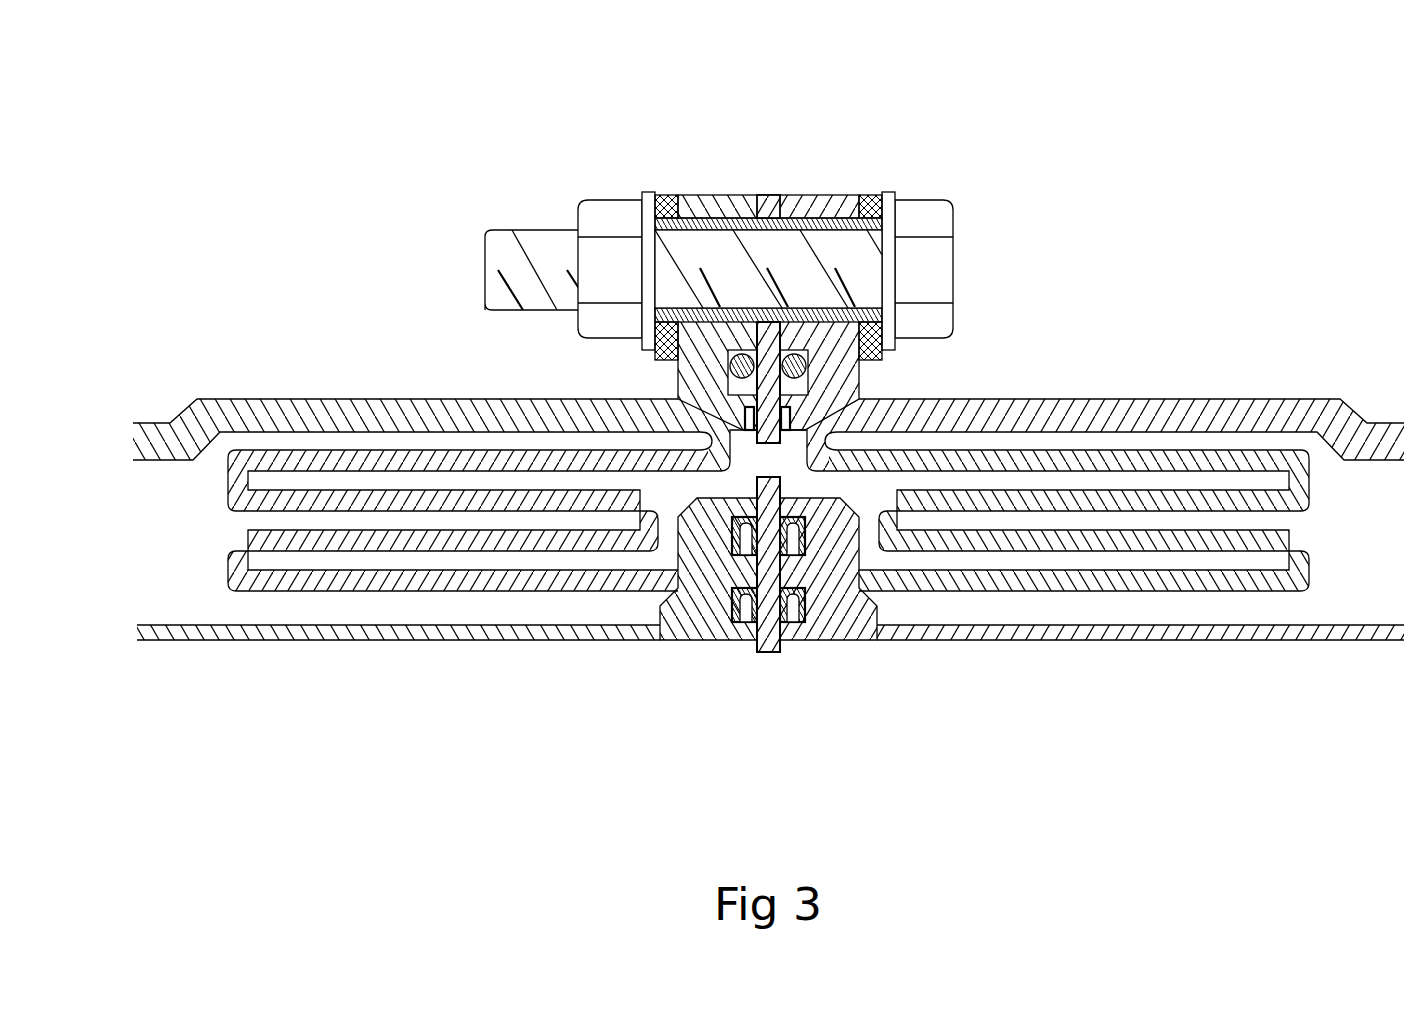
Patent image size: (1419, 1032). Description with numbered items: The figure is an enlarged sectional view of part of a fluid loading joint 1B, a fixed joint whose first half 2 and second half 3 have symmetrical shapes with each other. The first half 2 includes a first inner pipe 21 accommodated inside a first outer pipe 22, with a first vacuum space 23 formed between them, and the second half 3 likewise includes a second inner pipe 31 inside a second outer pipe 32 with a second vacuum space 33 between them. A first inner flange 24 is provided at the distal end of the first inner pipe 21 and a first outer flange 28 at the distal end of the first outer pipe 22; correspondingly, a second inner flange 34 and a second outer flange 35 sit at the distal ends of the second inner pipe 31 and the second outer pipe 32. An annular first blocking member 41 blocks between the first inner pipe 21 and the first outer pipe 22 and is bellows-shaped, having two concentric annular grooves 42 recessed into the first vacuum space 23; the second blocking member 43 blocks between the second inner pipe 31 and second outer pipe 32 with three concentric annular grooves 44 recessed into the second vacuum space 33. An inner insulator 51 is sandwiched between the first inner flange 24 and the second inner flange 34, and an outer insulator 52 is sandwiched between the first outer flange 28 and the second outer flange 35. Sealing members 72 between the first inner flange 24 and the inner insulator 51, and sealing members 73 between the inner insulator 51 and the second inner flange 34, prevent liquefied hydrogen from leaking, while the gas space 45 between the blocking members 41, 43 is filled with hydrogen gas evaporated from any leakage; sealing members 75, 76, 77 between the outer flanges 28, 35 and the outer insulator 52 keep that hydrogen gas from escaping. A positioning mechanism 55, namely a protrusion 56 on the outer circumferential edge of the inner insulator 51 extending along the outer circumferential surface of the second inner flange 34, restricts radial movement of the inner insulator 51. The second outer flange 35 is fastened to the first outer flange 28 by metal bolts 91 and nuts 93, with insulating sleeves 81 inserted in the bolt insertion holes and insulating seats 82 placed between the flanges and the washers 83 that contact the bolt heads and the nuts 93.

The fluid loading joint 1B is at (1125, 138).
The first half 2 is at (445, 522).
The second half 3 is at (1092, 522).
The first inner pipe 21 is at (292, 633).
The first outer pipe 22 is at (403, 410).
The first vacuum space 23 is at (187, 553).
The first inner flange 24 is at (690, 567).
The first outer flange 28 is at (722, 197).
The second inner pipe 31 is at (1243, 633).
The second outer pipe 32 is at (1135, 412).
The second vacuum space 33 is at (1349, 553).
The second inner flange 34 is at (843, 556).
The second outer flange 35 is at (817, 197).
The first blocking member 41 is at (474, 605).
The annular groove 42 is at (523, 478).
The second blocking member 43 is at (1062, 605).
The annular groove 44 is at (1018, 478).
The gas space 45 is at (749, 470).
The inner insulator 51 is at (768, 654).
The outer insulator 52 is at (762, 197).
The positioning mechanism 55 is at (988, 343).
The protrusion 56 is at (786, 490).
The sealing member 72 is at (727, 534).
The sealing member 73 is at (810, 534).
The sealing member 75 is at (744, 354).
The sealing member 76 is at (792, 354).
The sealing member 77 is at (790, 410).
The sleeve 81 is at (842, 197).
The seat 82 is at (670, 197).
The washer 83 is at (650, 197).
The bolt 91 is at (940, 267).
The nut 93 is at (610, 200).